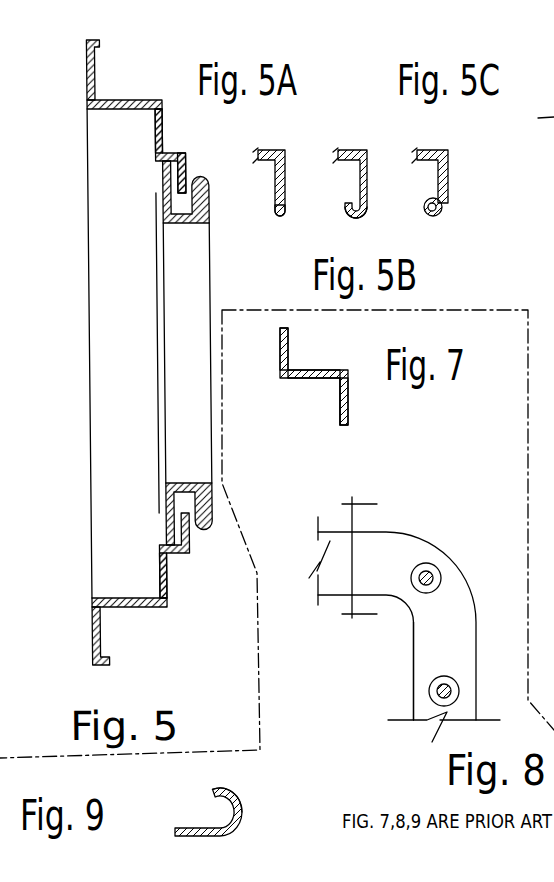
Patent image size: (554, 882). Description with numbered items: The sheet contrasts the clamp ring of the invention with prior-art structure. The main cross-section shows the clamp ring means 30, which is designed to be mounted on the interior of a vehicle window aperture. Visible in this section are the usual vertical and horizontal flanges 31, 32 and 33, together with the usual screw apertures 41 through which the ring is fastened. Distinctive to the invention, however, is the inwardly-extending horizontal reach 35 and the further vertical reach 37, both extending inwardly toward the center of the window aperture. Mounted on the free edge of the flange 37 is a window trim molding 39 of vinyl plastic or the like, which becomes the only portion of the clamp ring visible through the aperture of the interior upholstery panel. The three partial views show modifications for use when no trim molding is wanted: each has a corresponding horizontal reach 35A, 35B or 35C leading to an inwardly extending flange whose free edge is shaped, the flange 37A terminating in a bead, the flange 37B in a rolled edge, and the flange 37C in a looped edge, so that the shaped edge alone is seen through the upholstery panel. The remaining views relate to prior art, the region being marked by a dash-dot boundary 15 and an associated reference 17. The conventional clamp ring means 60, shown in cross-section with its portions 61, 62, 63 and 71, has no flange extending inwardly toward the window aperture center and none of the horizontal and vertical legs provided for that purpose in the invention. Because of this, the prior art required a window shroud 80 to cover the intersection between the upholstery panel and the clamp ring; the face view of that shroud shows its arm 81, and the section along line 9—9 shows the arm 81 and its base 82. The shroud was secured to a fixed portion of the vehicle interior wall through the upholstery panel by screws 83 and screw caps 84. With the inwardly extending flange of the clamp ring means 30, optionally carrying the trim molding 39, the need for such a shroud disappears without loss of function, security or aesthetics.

In FIG. 7, the prior art region 15 is at (543, 279).
In FIG. 5C, the reference line 17 is at (535, 122).
In FIG. 5, the clamp ring means 30 is at (81, 277).
In FIG. 5, the vertical flange 31 is at (89, 77).
In FIG. 5, the horizontal flange 32 is at (107, 100).
In FIG. 5, the flange 33 is at (166, 104).
In FIG. 5, the inwardly-extending horizontal reach 35 is at (181, 151).
In FIG. 5A, the hook tongue variant A 35A is at (261, 150).
In FIG. 5B, the hook tongue variant B 35B is at (343, 150).
In FIG. 5C, the hook tongue variant C 35C is at (420, 150).
In FIG. 5, the vertical reach 37 is at (187, 191).
In FIG. 5A, the flange with bead edge 37A is at (287, 201).
In FIG. 5B, the flange with rolled edge 37B is at (366, 202).
In FIG. 5C, the flange with looped edge 37C is at (443, 206).
In FIG. 5, the window trim molding 39 is at (196, 294).
In FIG. 5, the screw apertures 41 is at (157, 125).
In FIG. 7, the Z bracket 60 is at (276, 339).
In FIG. 7, the upper leg 61 is at (289, 349).
In FIG. 7, the web 62 is at (318, 380).
In FIG. 7, the lower leg 63 is at (350, 416).
In FIG. 7, the inner face 71 is at (342, 394).
In FIG. 8, the corner bracket 80 is at (398, 640).
In FIG. 8, the bracket arm 81 is at (453, 642).
In FIG. 9, the bracket arm 81 is at (243, 806).
In FIG. 9, the base flange 82 is at (210, 837).
In FIG. 8, the screws 83 is at (434, 577).
In FIG. 8, the screw caps 84 is at (430, 565).
In FIG. 8, the section line 9— 9 is at (349, 558).